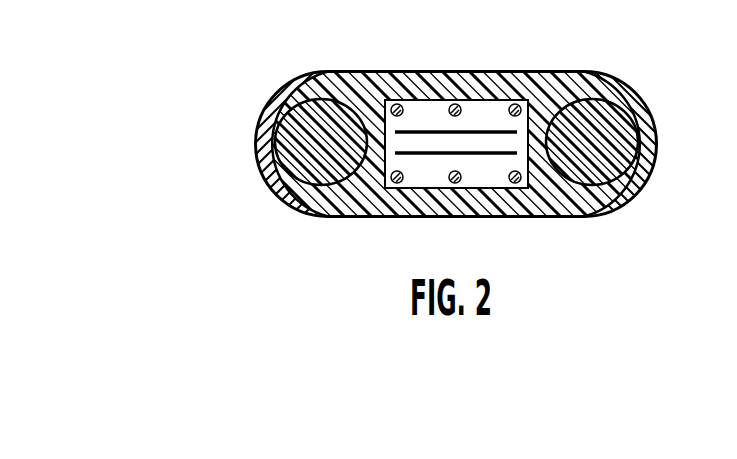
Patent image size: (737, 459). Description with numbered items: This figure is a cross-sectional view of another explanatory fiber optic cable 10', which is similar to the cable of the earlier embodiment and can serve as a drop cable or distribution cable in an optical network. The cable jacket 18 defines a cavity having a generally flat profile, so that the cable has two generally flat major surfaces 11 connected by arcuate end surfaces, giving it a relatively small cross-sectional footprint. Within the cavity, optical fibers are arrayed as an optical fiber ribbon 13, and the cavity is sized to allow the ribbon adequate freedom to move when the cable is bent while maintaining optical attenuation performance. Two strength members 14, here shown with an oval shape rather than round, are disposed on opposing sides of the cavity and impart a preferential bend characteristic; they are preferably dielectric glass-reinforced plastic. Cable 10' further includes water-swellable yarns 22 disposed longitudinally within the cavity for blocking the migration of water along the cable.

The fiber optic cable 10' is at (408, 108).
The major surfaces 11 is at (582, 73).
The optical fiber ribbon 13 is at (415, 153).
The strength member 14 is at (322, 100).
The cable jacket 18 is at (309, 205).
The water-swellable yarn 22 is at (394, 104).